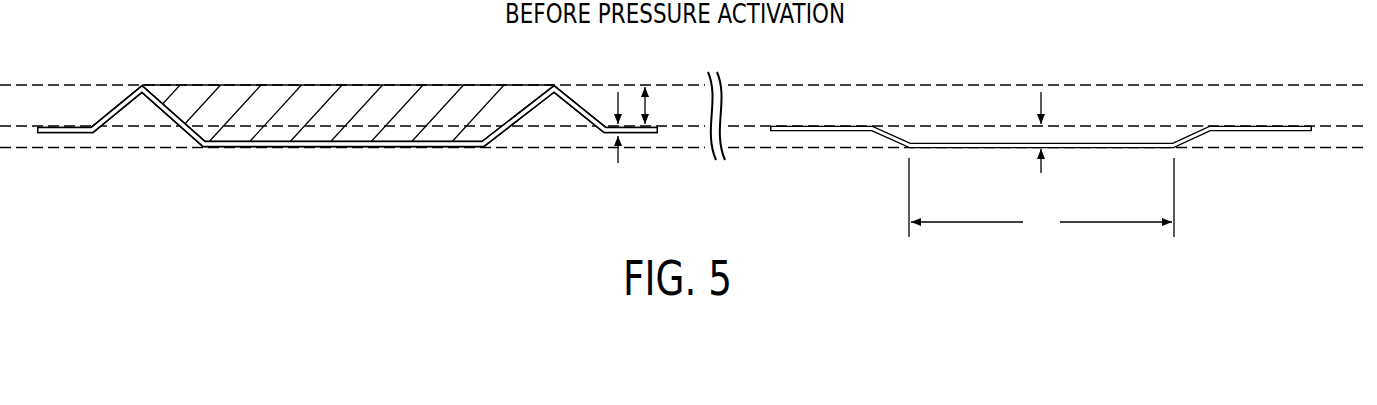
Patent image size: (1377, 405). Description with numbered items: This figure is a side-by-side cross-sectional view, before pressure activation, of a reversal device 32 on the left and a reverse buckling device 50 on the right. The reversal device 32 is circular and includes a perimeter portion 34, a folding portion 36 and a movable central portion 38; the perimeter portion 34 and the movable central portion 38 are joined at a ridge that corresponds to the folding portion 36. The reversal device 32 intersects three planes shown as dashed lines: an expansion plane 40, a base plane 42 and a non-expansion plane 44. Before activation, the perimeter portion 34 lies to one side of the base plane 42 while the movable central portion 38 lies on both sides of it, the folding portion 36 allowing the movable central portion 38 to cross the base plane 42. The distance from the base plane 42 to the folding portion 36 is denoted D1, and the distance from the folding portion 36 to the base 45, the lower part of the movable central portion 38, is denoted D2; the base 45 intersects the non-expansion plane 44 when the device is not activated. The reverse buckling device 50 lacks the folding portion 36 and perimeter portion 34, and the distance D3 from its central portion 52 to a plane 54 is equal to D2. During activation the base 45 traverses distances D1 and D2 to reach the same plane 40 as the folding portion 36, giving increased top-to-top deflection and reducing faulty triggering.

The reversal device 32 is at (269, 46).
The perimeter portion 34 is at (552, 110).
The folding portion 36 is at (142, 81).
The movable central portion 38 is at (350, 102).
The expansion plane 40 is at (26, 85).
The base plane 42 is at (13, 126).
The non-expansion plane 44 is at (22, 148).
The base 45 is at (243, 148).
The reverse buckling device 50 is at (1250, 117).
The central portion 52 is at (1041, 198).
The plane 54 is at (1338, 128).
The distance D1 is at (647, 101).
The distance D2 is at (618, 160).
The distance D3 is at (1041, 165).